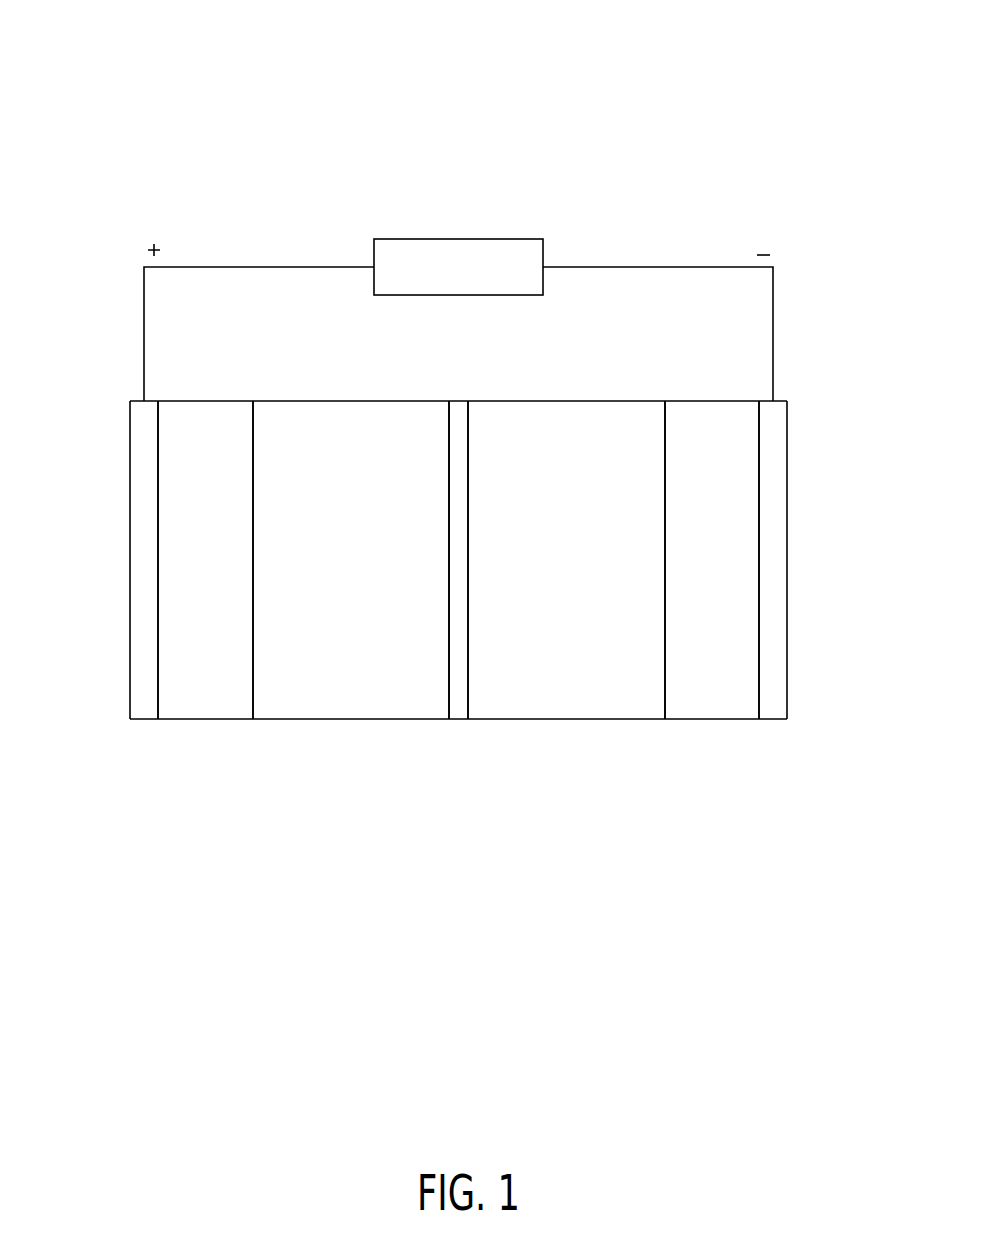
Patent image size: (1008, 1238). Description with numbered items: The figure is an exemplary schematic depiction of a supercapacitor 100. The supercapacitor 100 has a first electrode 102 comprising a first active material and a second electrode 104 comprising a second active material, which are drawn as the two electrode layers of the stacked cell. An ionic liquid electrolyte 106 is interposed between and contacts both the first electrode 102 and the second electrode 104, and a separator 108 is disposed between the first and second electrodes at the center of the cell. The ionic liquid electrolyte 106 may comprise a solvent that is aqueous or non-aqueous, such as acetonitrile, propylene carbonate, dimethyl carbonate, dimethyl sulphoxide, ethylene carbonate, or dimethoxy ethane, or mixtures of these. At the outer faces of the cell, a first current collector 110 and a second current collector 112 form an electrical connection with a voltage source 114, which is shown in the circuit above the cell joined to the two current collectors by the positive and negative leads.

The supercapacitor 100 is at (180, 71).
The first electrode 102 is at (208, 667).
The second electrode 104 is at (710, 675).
The ionic liquid electrolyte 106 is at (532, 697).
The separator 108 is at (458, 425).
The first current collector 110 is at (140, 550).
The second current collector 112 is at (770, 548).
The voltage source 114 is at (451, 239).